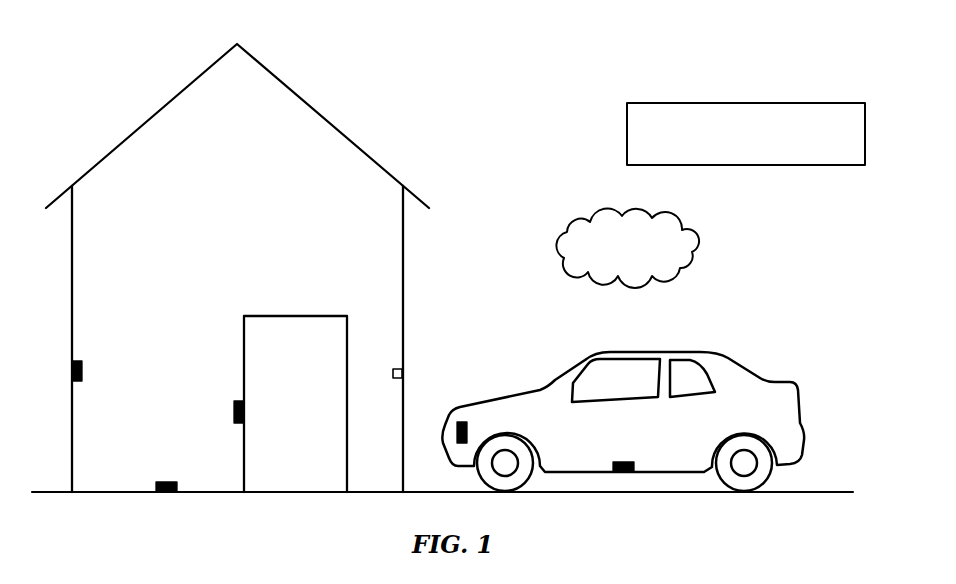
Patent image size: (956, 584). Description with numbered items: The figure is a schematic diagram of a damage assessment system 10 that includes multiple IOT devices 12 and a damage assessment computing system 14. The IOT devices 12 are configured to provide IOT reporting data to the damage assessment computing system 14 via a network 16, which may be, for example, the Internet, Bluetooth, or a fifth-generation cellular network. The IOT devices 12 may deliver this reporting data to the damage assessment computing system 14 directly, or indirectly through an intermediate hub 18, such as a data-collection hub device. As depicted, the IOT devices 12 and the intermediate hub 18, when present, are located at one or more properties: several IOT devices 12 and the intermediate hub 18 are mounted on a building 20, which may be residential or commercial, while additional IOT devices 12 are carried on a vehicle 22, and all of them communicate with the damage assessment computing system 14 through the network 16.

The damage assessment system 10 is at (570, 32).
The IOT devices 12 is at (84, 367).
The damage assessment computing system 14 is at (747, 103).
The network 16 is at (637, 215).
The intermediate hub 18 is at (393, 368).
The building 20 is at (404, 263).
The vehicle 22 is at (676, 351).